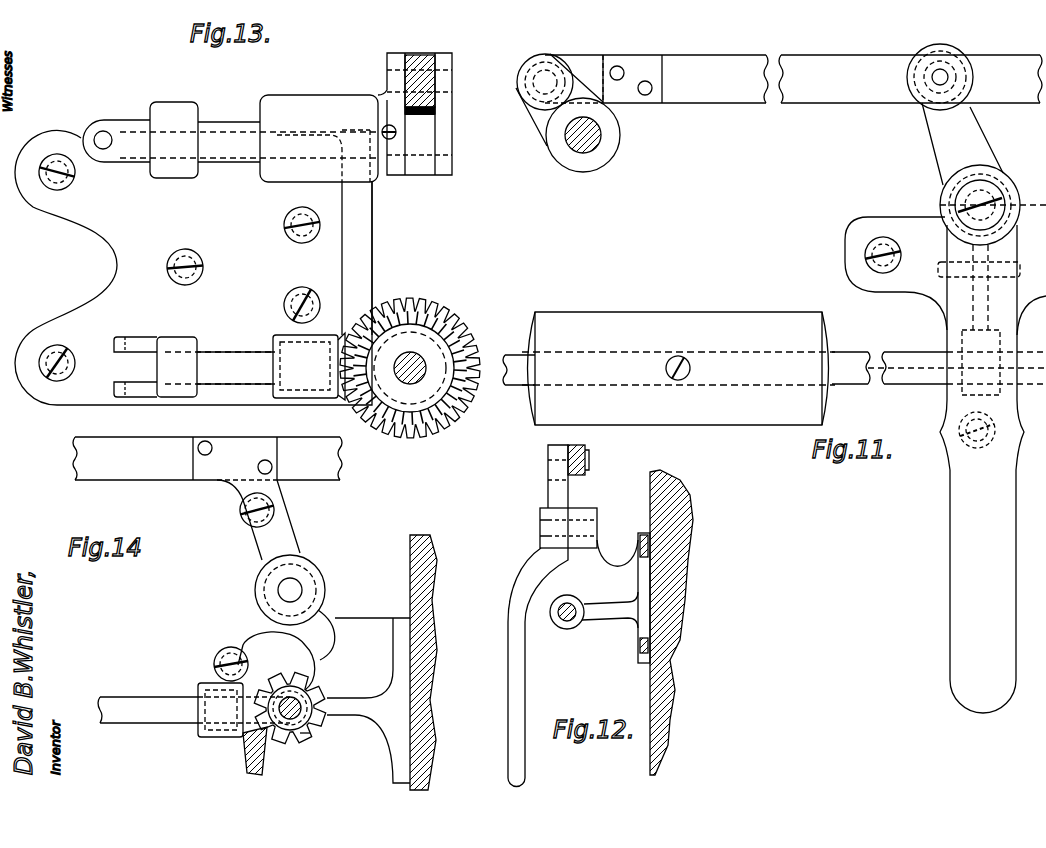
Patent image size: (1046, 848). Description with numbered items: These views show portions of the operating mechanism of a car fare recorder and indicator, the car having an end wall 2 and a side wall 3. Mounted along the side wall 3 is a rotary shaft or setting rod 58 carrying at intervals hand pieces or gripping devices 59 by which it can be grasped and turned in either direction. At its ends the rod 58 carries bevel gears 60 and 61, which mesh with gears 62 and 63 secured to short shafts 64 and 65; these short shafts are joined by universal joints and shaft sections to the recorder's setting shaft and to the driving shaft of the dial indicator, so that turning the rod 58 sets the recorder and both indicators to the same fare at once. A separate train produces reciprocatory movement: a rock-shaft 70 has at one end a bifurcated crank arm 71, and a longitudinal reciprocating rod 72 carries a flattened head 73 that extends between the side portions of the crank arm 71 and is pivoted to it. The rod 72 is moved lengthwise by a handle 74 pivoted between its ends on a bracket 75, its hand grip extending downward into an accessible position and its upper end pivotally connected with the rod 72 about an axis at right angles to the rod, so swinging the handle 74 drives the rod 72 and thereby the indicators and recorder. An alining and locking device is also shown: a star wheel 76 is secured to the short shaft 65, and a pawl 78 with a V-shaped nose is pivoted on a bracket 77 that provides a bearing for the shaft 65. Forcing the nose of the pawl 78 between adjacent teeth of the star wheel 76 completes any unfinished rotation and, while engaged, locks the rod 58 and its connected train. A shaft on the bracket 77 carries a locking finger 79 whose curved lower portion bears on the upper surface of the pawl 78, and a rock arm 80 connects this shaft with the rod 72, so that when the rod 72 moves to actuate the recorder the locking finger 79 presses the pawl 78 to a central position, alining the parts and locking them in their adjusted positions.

In FIG. 14, the end wall 2 is at (427, 572).
In FIG. 12, the side wall 3 is at (672, 520).
In FIG. 13, the rotary shaft or setting rod 58 is at (430, 363).
In FIG. 11, the rotary shaft or setting rod 58 is at (903, 352).
In FIG. 14, the rotary shaft or setting rod 58 is at (154, 700).
In FIG. 12, the rotary shaft or setting rod 58 is at (570, 625).
In FIG. 11, the hand pieces or gripping devices 59 is at (624, 320).
In FIG. 13, the bevel gear 60 is at (437, 318).
In FIG. 14, the bevel gear 61 is at (253, 750).
In FIG. 13, the gear 62 is at (345, 328).
In FIG. 14, the gear 63 is at (308, 735).
In FIG. 13, the short shaft 64 is at (219, 362).
In FIG. 14, the short shaft 65 is at (322, 725).
In FIG. 13, the rock-shaft 70 is at (217, 123).
In FIG. 11, the rock-shaft 70 is at (587, 152).
In FIG. 13, the bifurcated crank arm 71 is at (395, 62).
In FIG. 11, the bifurcated crank arm 71 is at (539, 132).
In FIG. 13, the longitudinal reciprocating rod 72 is at (417, 70).
In FIG. 11, the longitudinal reciprocating rod 72 is at (738, 90).
In FIG. 14, the longitudinal reciprocating rod 72 is at (140, 462).
In FIG. 12, the longitudinal reciprocating rod 72 is at (575, 479).
In FIG. 13, the flattened head 73 is at (434, 97).
In FIG. 11, the flattened head 73 is at (585, 60).
In FIG. 11, the handle 74 is at (965, 498).
In FIG. 12, the handle 74 is at (520, 688).
In FIG. 11, the bracket 75 is at (1037, 235).
In FIG. 12, the bracket 75 is at (608, 557).
In FIG. 14, the star wheel 76 is at (322, 690).
In FIG. 14, the bracket 77 is at (348, 632).
In FIG. 14, the pawl 78 is at (267, 645).
In FIG. 14, the locking finger 79 is at (323, 613).
In FIG. 14, the rock arm 80 is at (280, 538).